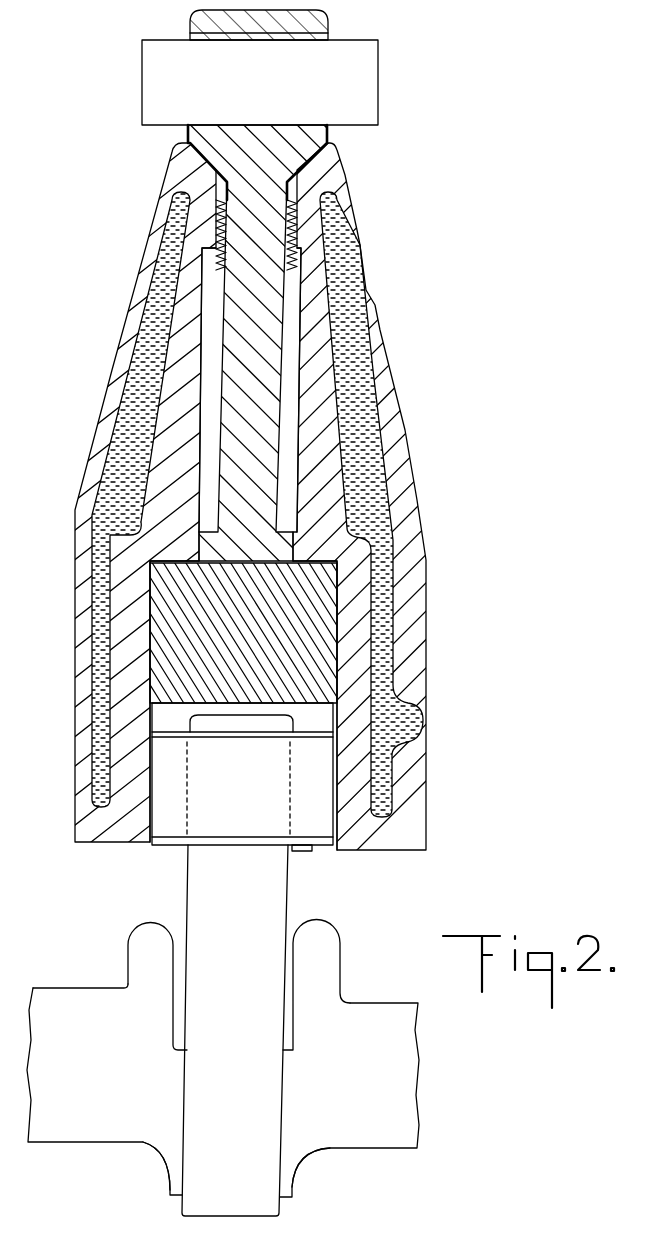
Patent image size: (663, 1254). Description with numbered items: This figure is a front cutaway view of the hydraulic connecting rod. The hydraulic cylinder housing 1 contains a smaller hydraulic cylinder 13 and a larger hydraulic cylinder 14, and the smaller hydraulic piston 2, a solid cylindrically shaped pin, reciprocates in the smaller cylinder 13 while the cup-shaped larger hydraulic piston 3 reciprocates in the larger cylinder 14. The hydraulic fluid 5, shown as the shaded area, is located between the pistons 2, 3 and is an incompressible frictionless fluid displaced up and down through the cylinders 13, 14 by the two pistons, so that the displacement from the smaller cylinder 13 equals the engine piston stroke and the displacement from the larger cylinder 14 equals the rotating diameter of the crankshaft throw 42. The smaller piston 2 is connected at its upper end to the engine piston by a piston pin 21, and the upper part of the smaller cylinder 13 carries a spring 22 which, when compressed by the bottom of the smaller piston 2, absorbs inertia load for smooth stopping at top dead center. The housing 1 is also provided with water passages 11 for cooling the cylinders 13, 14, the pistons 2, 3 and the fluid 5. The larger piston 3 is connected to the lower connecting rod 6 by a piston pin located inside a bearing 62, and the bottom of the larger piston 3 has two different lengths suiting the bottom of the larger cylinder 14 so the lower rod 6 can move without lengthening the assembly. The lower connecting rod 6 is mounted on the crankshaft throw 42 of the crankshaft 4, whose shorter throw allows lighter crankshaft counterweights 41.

The hydraulic cylinder housing 1 is at (332, 173).
The smaller hydraulic piston 2 is at (235, 308).
The larger hydraulic piston 3 is at (165, 823).
The crankshaft 4 is at (223, 1059).
The hydraulic fluid 5 is at (318, 612).
The lower connecting rod 6 is at (273, 928).
The water passages 11 is at (107, 477).
The smaller hydraulic cylinder 13 is at (200, 381).
The larger hydraulic cylinder 14 is at (150, 630).
The piston pin 21 is at (357, 75).
The spring 22 is at (220, 232).
The crankshaft counterweights 41 is at (332, 970).
The crankshaft throw 42 is at (288, 1173).
The bearing 62 is at (308, 852).